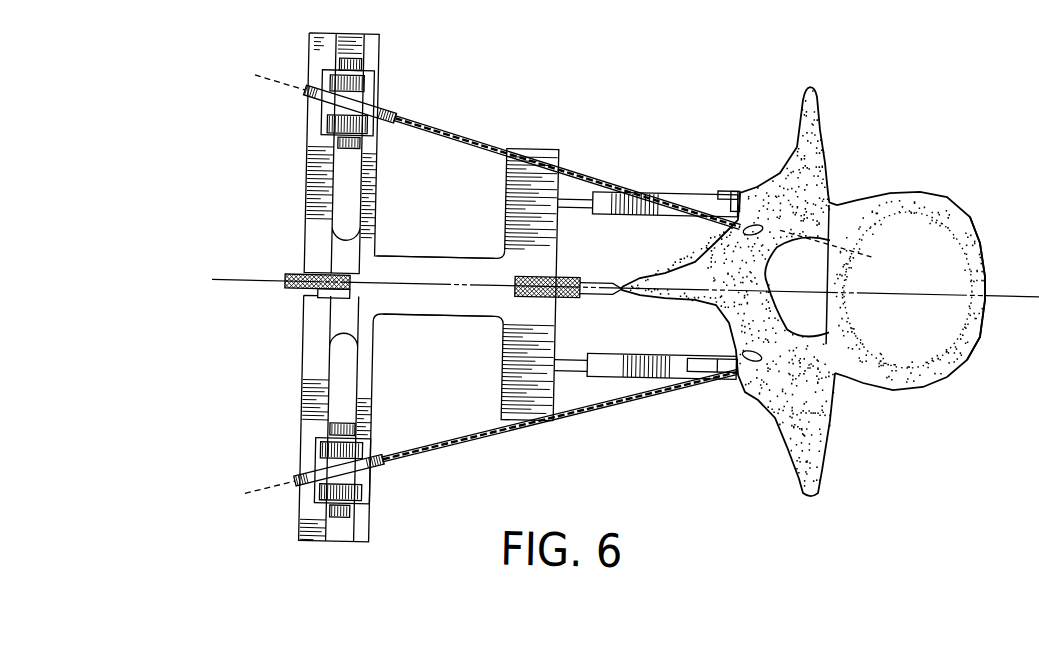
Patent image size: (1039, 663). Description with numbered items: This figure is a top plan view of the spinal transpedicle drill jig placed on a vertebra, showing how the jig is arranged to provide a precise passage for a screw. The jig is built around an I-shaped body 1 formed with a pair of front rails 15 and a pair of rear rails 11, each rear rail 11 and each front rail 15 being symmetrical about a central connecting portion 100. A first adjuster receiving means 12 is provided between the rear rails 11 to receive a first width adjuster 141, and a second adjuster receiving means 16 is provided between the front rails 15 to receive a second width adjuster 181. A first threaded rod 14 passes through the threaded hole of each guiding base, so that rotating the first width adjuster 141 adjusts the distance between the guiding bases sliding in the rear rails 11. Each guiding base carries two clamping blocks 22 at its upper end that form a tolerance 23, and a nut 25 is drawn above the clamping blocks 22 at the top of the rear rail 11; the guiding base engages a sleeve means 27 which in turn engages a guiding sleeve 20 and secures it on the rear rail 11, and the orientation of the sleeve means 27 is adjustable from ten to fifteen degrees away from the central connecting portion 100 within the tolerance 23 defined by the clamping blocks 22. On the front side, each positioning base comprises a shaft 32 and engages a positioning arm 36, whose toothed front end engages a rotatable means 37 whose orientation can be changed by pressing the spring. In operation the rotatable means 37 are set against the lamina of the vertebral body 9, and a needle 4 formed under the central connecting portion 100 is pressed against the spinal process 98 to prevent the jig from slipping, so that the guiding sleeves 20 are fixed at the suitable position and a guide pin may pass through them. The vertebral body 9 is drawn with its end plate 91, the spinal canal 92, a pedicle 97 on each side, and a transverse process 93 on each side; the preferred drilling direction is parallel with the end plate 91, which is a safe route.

The I-shaped body 1 is at (308, 232).
The rear rail 11 is at (307, 397).
The first adjuster receiving means 12 is at (372, 262).
The central connecting portion 100 is at (438, 311).
The first width adjuster 141 is at (285, 292).
The first threaded rod 14 is at (312, 301).
The knurled nut 25 is at (357, 68).
The tolerance 23 is at (373, 95).
The clamping block 22 is at (325, 133).
The sleeve means 27 is at (298, 102).
The guiding sleeve 20 is at (620, 412).
The second adjuster receiving means 16 is at (517, 279).
The front rail 15 is at (499, 340).
The second width adjuster 181 is at (563, 298).
The needle 4 is at (598, 298).
The shaft 32 is at (574, 216).
The positioning arm 36 is at (642, 212).
The rotatable means 37 is at (731, 190).
The spinal process 98 is at (643, 302).
The pedicle 97 is at (828, 193).
The vertebral body 9 is at (976, 218).
The end plate 91 is at (987, 257).
The spinal canal 92 is at (839, 368).
The transverse process 93 is at (801, 466).